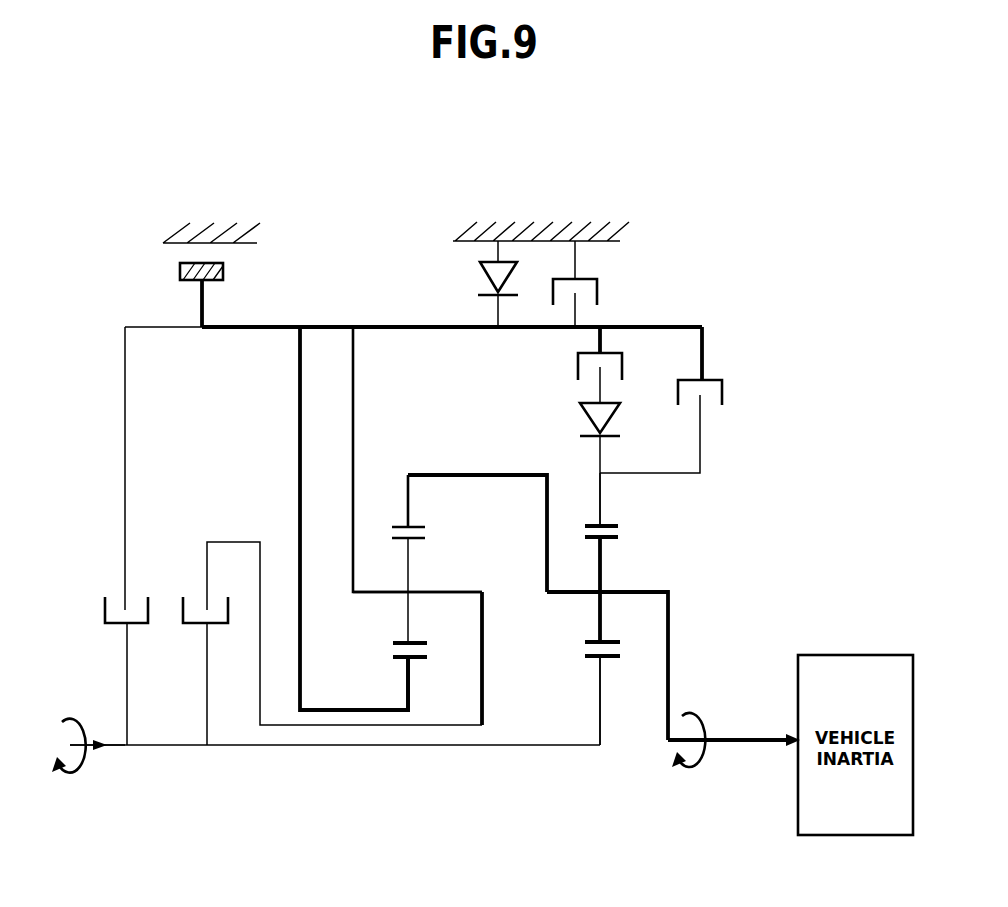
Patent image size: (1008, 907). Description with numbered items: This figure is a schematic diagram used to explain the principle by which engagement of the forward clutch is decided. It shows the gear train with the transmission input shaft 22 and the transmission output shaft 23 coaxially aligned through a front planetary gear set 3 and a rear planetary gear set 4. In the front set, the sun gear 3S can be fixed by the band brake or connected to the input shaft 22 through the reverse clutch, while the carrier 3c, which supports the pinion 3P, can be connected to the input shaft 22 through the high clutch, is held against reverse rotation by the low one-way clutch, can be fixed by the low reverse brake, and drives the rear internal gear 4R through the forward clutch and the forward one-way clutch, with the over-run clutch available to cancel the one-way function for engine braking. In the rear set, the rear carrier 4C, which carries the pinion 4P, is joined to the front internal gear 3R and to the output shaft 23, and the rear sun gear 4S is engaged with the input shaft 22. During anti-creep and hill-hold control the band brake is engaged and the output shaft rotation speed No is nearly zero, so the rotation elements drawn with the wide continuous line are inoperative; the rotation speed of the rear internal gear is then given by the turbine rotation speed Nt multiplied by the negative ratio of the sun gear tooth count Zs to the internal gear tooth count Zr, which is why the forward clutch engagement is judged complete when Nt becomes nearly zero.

The front planetary gear set 3 is at (423, 577).
The internal gear of the front planetary gear set 3R is at (408, 492).
The pinion of the front planetary gear set 3P is at (412, 607).
The sun gear of the front planetary gear set 3S is at (408, 675).
The carrier of the front planetary gear set 3c is at (442, 590).
The rear planetary gear set 4 is at (613, 609).
The internal gear of the rear planetary gear set 4R is at (600, 506).
The pinion of the rear planetary gear set 4P is at (596, 612).
The rear carrier 4C is at (645, 595).
The sun gear of the rear planetary gear set 4S is at (600, 713).
The number of teeth of the internal gear Zr is at (618, 524).
The number of teeth of the sun gear Zs is at (590, 661).
The transmission input shaft 22 is at (113, 750).
The transmission output shaft 23 is at (722, 738).
The turbine rotation speed Nt is at (69, 763).
The output shaft rotation speed No is at (732, 755).